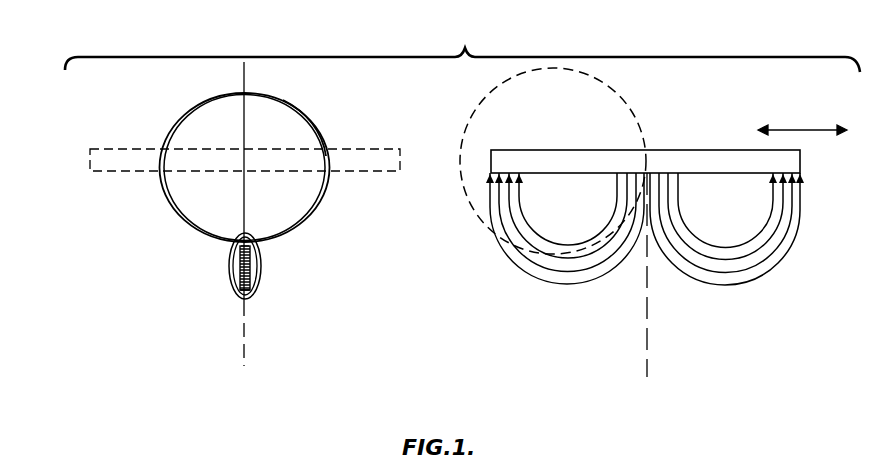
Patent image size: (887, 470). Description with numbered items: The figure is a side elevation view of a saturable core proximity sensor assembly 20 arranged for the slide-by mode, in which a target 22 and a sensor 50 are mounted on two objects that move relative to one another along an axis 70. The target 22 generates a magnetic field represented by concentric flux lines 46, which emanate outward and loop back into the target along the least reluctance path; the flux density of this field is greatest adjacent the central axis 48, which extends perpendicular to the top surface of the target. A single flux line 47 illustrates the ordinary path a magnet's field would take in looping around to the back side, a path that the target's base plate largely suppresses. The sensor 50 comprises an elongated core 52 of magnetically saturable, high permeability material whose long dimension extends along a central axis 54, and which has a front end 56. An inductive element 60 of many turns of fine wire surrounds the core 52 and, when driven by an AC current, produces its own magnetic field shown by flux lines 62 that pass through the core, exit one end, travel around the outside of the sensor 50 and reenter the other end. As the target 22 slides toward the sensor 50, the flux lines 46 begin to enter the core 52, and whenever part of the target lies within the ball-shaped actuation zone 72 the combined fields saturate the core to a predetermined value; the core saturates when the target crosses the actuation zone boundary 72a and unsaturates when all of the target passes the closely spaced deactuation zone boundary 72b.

The saturable core proximity sensor assembly 20 is at (462, 44).
The target 22 is at (90, 152).
The flux lines 46 is at (731, 287).
The flux line 47 is at (645, 150).
The axis 48 is at (647, 356).
The sensor 50 is at (261, 272).
The core 52 is at (232, 291).
The central axis 54 is at (245, 338).
The front end 56 is at (230, 238).
The inductive element 60 is at (259, 259).
The flux lines 62 is at (232, 270).
The axis 70 is at (803, 129).
The actuation zone 72 is at (283, 101).
The actuation zone boundary 72a is at (312, 133).
The deactuation zone boundary 72b is at (326, 156).